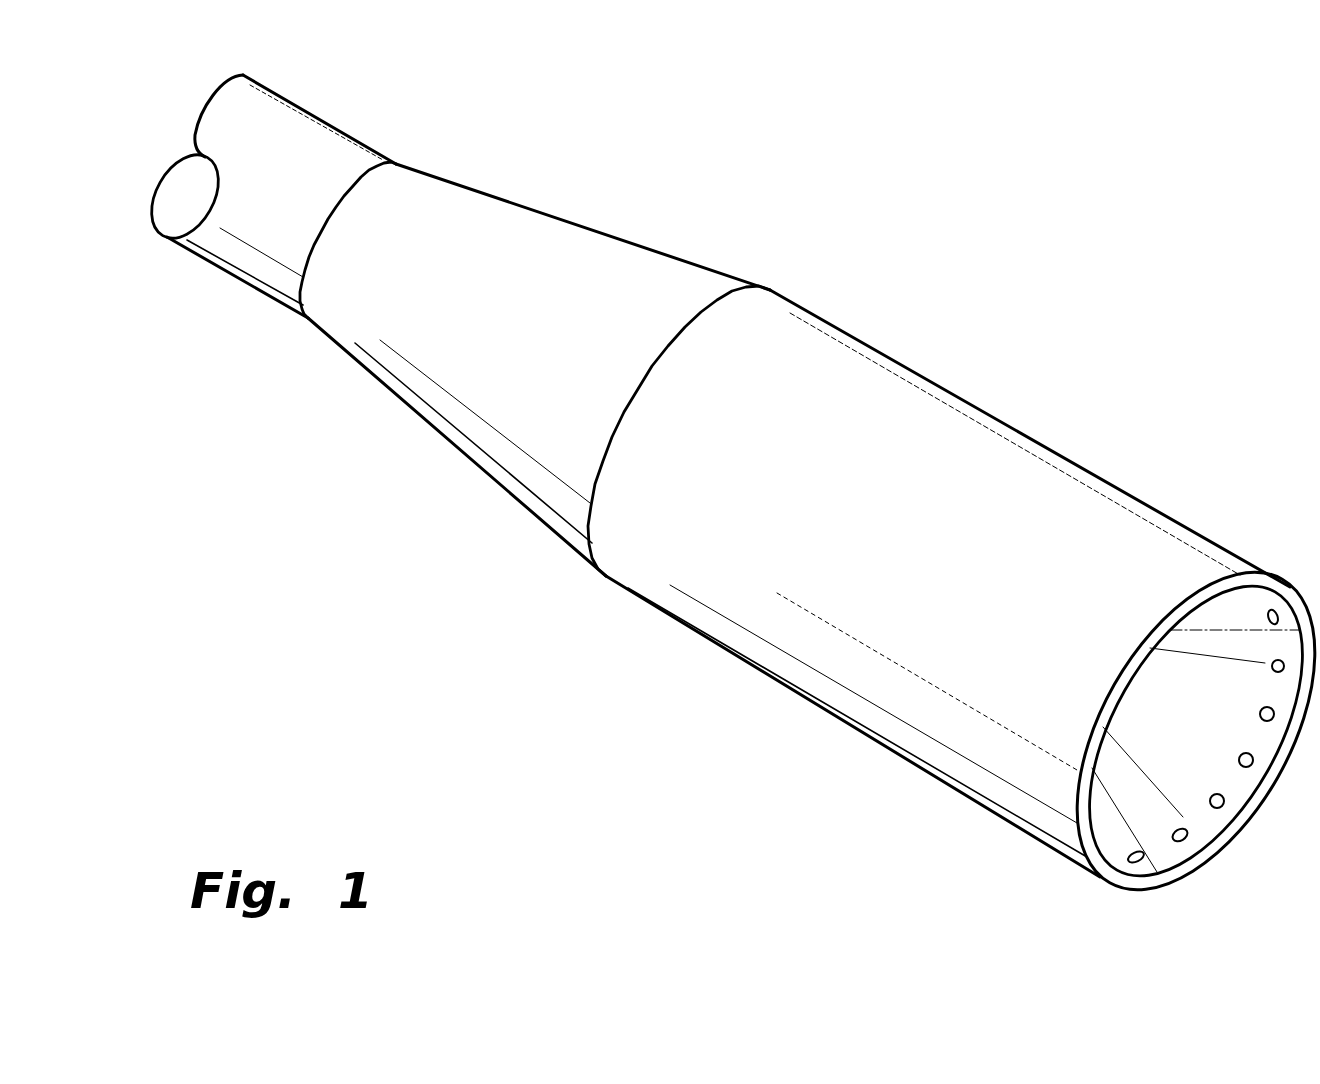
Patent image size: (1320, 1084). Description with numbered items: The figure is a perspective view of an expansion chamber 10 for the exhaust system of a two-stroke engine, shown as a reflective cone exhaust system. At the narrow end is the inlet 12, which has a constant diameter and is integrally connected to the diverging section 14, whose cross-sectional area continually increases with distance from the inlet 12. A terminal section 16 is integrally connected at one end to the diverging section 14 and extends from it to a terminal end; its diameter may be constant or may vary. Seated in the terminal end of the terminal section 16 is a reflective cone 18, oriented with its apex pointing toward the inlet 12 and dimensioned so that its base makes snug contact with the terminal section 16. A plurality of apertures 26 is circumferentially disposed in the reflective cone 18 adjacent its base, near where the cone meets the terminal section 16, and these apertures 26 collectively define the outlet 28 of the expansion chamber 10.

The expansion chamber 10 is at (352, 592).
The inlet 12 is at (310, 112).
The diverging section 14 is at (527, 209).
The terminal section 16 is at (965, 402).
The reflective cone 18 is at (1173, 730).
The apertures 26 is at (1260, 717).
The outlet 28 is at (1255, 876).